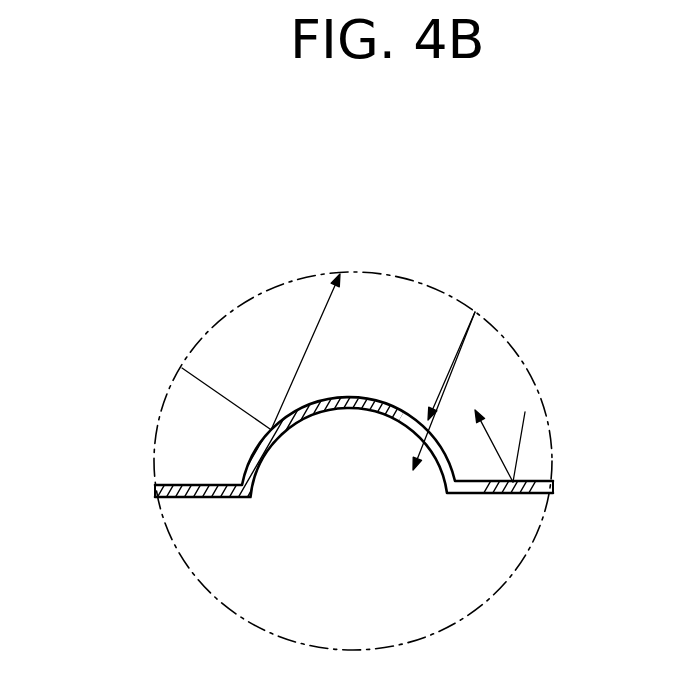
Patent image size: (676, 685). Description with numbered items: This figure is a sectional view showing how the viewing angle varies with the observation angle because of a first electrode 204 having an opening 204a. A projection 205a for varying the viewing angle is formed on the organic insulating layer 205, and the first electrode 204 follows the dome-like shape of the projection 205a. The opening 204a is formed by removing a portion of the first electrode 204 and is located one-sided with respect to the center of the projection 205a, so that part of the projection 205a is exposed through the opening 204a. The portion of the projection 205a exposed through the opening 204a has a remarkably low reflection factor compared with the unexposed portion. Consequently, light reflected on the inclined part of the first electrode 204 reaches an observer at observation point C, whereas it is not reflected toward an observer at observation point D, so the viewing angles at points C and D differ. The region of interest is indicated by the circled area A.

The first electrode 204 is at (155, 487).
The opening 204a is at (437, 433).
The organic insulating layer 205 is at (181, 549).
The projection 205a is at (373, 460).
The region A is at (540, 538).
The observation point C is at (271, 333).
The observation point D is at (457, 371).